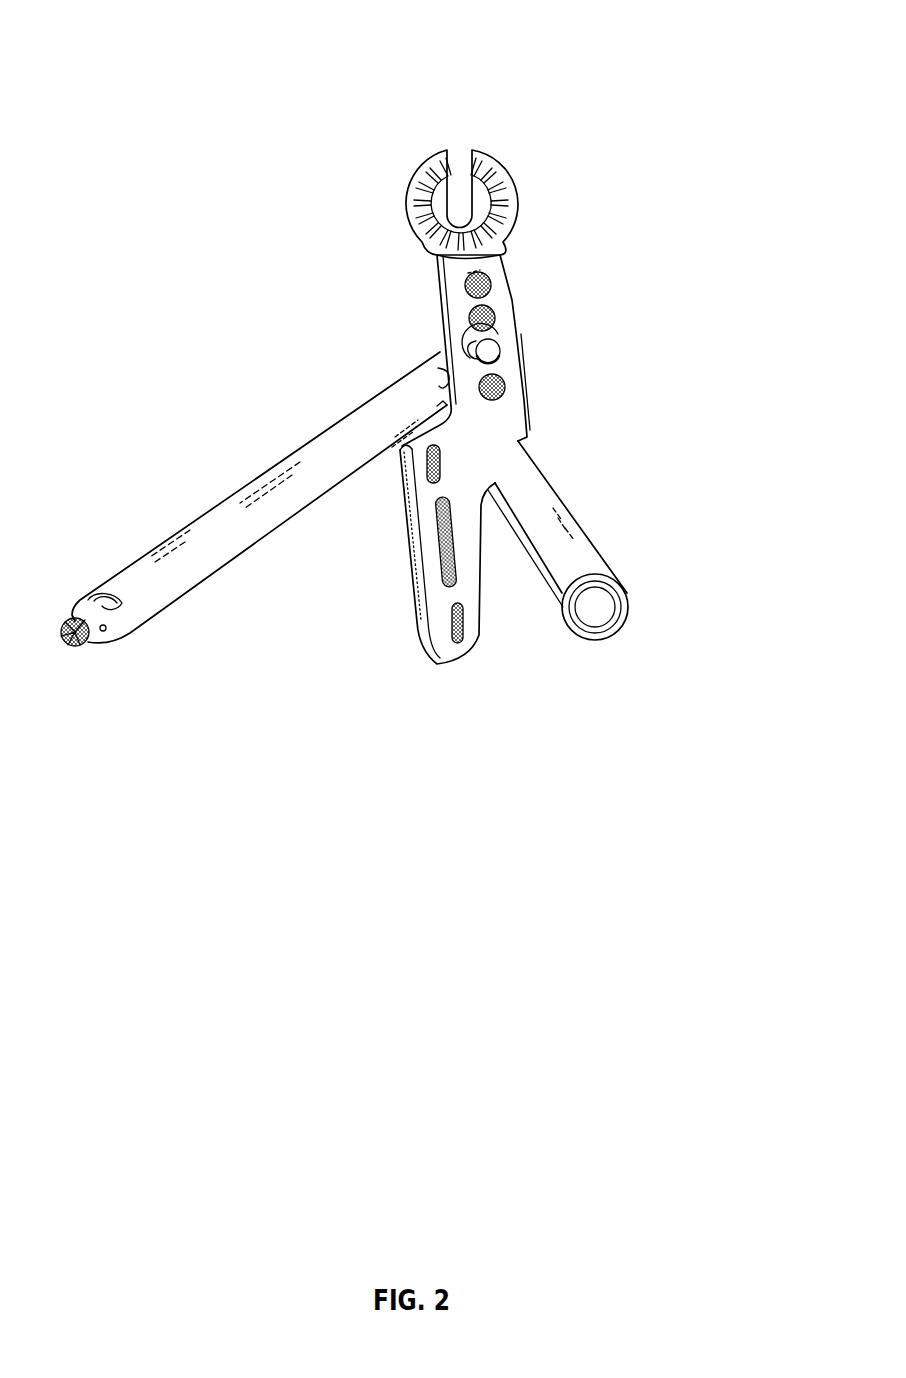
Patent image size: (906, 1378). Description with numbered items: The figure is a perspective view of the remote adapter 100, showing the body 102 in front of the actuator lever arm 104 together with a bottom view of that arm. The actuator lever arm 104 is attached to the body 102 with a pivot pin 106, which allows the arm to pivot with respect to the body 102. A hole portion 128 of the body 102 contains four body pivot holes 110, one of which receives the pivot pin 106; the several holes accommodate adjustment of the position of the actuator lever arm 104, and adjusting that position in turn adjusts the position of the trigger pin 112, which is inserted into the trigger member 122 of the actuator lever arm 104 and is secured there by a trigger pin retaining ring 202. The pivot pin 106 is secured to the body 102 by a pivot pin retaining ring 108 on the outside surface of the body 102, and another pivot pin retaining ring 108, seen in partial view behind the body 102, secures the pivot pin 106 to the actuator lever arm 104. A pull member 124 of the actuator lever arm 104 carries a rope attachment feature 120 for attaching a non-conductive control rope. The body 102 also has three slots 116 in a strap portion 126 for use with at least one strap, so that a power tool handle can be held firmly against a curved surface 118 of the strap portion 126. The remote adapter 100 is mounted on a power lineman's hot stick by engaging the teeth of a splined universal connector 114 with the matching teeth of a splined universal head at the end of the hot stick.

The remote adapter 100 is at (676, 70).
The body 102 is at (545, 417).
The actuator lever arm 104 is at (322, 416).
The pivot pin 106 is at (480, 340).
The pivot pin retaining ring 108 is at (444, 376).
The body pivot holes 110 is at (522, 327).
The trigger pin 112 is at (93, 635).
The splined universal connector 114 is at (407, 195).
The slots 116 is at (450, 603).
The curved surface 118 is at (423, 607).
The rope attachment feature 120 is at (615, 602).
The trigger member 122 is at (247, 503).
The pull member 124 is at (547, 497).
The strap portion 126 is at (467, 538).
The hole portion 128 is at (495, 292).
The trigger pin retaining ring 202 is at (122, 608).